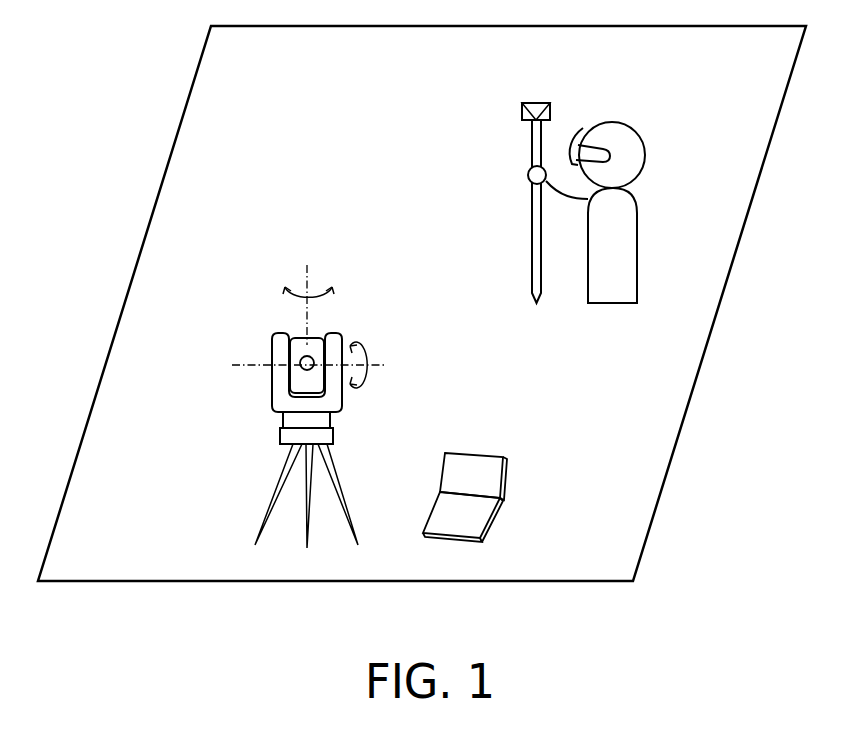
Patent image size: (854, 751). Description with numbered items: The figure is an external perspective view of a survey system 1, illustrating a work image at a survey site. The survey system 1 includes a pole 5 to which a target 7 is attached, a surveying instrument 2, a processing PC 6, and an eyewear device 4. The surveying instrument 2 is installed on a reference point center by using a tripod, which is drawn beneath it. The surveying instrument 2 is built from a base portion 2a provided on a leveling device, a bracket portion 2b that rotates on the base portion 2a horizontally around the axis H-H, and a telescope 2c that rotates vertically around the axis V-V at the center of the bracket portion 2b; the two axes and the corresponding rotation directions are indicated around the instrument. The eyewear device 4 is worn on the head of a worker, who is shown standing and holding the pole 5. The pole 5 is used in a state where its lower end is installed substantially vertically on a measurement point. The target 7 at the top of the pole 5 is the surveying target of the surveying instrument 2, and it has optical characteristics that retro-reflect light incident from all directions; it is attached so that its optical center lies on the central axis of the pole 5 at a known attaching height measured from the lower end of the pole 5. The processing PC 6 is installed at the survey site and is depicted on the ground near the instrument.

The survey system 1 is at (729, 75).
The surveying instrument 2 is at (308, 405).
The base portion 2a is at (283, 425).
The bracket portion 2b is at (280, 395).
The telescope 2c is at (301, 358).
The eyewear device 4 is at (585, 127).
The pole 5 is at (532, 272).
The processing PC 6 is at (507, 455).
The target 7 is at (538, 103).